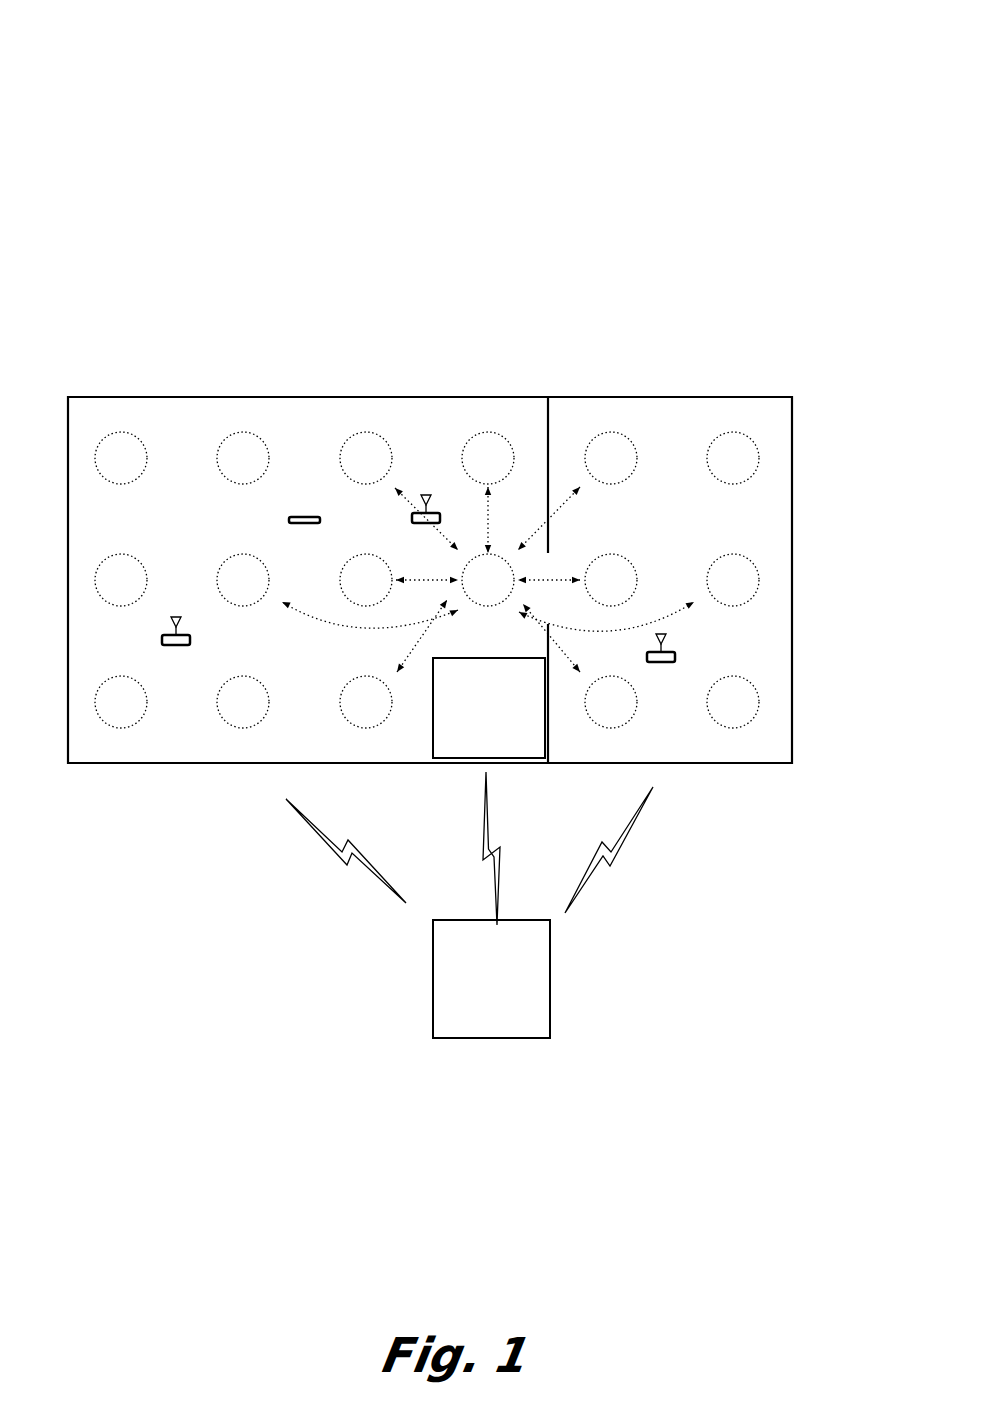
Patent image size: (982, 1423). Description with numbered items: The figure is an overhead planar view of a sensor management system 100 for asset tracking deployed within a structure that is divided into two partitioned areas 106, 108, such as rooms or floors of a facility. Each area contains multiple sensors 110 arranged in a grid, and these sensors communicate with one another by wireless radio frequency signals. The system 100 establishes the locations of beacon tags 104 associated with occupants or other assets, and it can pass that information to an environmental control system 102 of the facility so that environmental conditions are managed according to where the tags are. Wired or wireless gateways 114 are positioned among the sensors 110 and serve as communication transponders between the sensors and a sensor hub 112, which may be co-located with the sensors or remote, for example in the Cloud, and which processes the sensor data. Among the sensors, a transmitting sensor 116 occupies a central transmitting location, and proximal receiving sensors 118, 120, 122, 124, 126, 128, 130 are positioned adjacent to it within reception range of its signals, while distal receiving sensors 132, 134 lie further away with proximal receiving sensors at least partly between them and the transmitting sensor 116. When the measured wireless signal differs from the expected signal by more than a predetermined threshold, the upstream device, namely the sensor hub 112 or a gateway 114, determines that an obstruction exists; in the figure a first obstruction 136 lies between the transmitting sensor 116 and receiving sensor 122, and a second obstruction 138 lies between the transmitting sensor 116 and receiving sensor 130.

The sensor management system 100 is at (124, 70).
The environmental control system 102 is at (477, 735).
The beacon tag 104 is at (303, 516).
The area 106 is at (164, 424).
The area 108 is at (655, 424).
The sensors 110 is at (427, 580).
The sensor hub 112 is at (478, 1008).
The gateways 114 is at (173, 645).
The transmitting sensor 116 is at (478, 555).
The proximal receiving sensor 118 is at (350, 436).
The proximal receiving sensor 120 is at (488, 432).
The proximal receiving sensor 122 is at (610, 432).
The proximal receiving sensor 124 is at (351, 559).
The proximal receiving sensor 126 is at (612, 553).
The proximal receiving sensor 128 is at (366, 729).
The proximal receiving sensor 130 is at (612, 729).
The distal receiving sensor 132 is at (228, 559).
The distal receiving sensor 134 is at (731, 554).
The first obstruction 136 is at (550, 442).
The second obstruction 138 is at (551, 633).